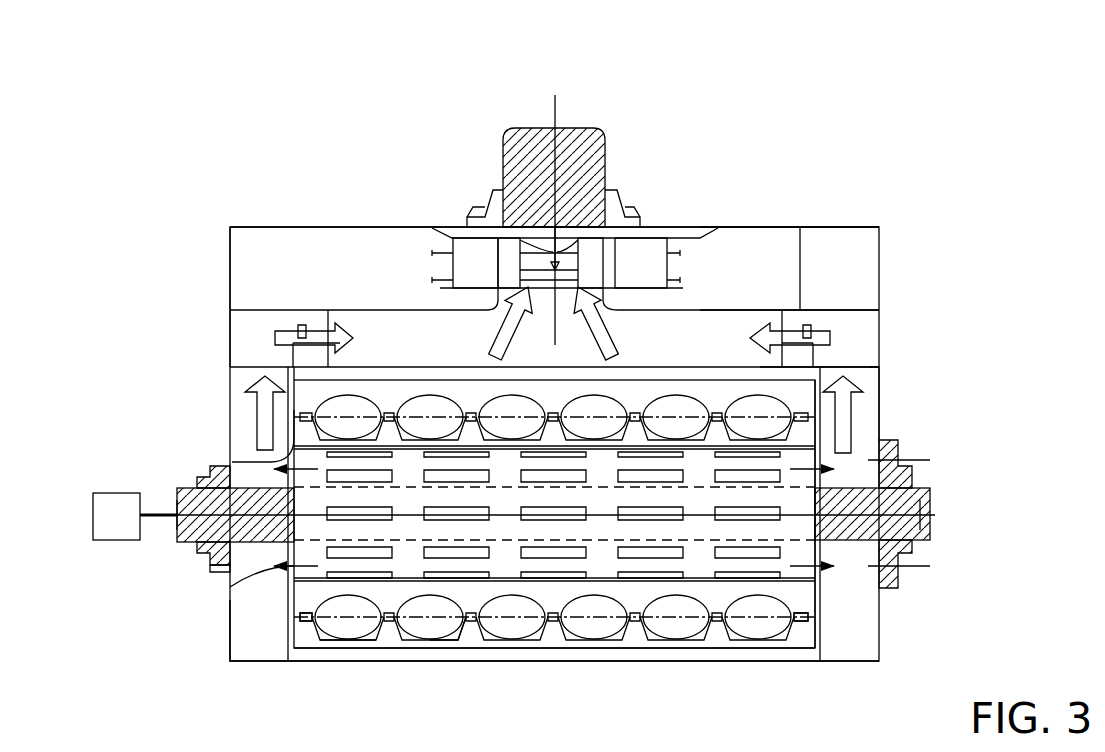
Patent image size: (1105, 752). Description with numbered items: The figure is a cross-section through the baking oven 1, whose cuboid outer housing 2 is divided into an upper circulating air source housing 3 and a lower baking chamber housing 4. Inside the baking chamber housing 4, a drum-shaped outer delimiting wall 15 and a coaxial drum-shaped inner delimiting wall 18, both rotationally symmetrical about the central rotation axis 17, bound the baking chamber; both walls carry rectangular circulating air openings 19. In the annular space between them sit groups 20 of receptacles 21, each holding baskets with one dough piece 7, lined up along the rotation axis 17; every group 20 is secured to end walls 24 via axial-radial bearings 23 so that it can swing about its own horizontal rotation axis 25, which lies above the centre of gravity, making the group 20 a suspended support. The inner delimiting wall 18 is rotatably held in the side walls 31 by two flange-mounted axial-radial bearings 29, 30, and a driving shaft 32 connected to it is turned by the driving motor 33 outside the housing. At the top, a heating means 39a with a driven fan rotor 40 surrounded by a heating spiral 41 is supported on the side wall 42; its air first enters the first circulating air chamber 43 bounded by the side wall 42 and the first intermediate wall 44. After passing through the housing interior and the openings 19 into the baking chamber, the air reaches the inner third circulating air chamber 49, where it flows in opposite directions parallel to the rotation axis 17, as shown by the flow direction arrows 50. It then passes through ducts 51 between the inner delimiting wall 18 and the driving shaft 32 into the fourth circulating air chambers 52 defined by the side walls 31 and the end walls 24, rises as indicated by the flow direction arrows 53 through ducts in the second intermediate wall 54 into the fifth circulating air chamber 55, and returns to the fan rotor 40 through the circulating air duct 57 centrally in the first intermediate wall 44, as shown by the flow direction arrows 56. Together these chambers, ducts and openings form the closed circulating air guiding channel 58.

The baking oven 1 is at (720, 158).
The outer housing 2 is at (296, 222).
The circulating air source housing 3 is at (226, 332).
The baking chamber housing 4 is at (226, 603).
The dough pieces 7 is at (568, 626).
The outer delimiting wall 15 is at (635, 650).
The rotation axis 17 is at (935, 515).
The inner delimiting wall 18 is at (700, 582).
The circulating air openings 19 is at (450, 559).
The groups of receptacles 20 is at (353, 644).
The receptacles 21 is at (455, 641).
The axial-radial bearings 23 is at (302, 621).
The end walls 24 is at (818, 603).
The rotation axis of receptacles 25 is at (280, 462).
The axial-radial bearing 29 is at (932, 490).
The axial-radial bearing 30 is at (176, 489).
The side walls 31 is at (228, 290).
The driving shaft 32 is at (196, 533).
The driving motor 33 is at (100, 530).
The heating means 39a is at (570, 126).
The fan rotor 40 is at (484, 270).
The heating spiral 41 is at (727, 228).
The side wall 42 is at (828, 225).
The first circulating air chamber 43 is at (855, 262).
The first intermediate wall 44 is at (848, 308).
The third circulating air chamber 49 is at (437, 521).
The flow direction arrows 50 is at (290, 582).
The ducts 51 is at (300, 560).
The fourth circulating air chambers 52 is at (245, 410).
The flow direction arrows 53 is at (265, 430).
The second intermediate wall 54 is at (848, 360).
The fifth circulating air chamber 55 is at (380, 345).
The flow direction arrows 56 is at (600, 340).
The circulating air duct 57 is at (608, 292).
The closed circulating air guiding channel 58 is at (882, 432).